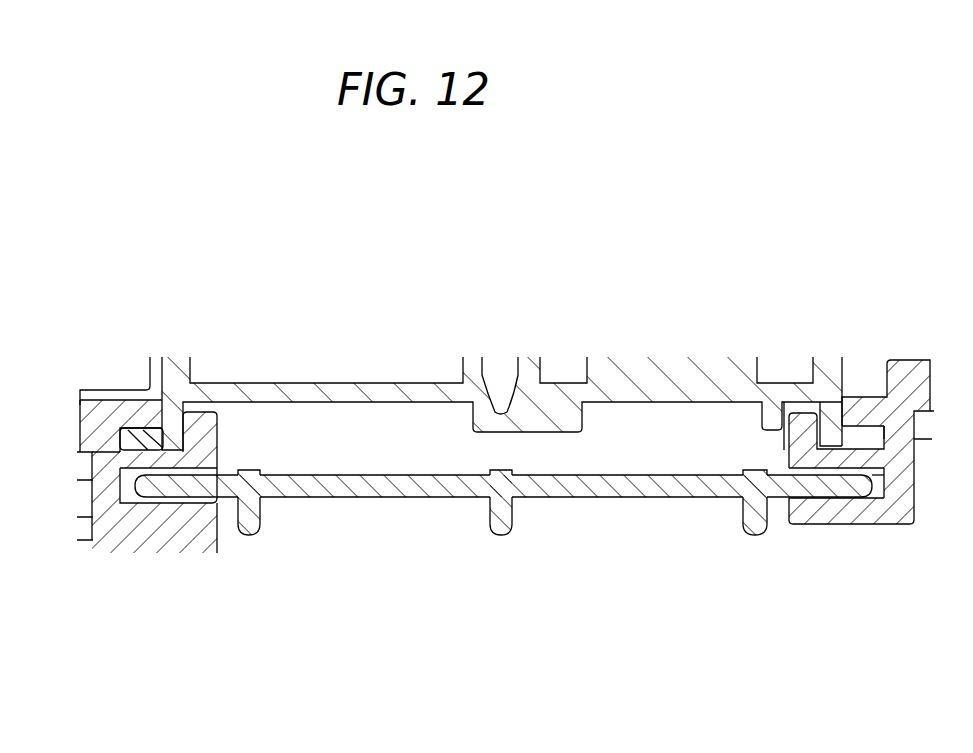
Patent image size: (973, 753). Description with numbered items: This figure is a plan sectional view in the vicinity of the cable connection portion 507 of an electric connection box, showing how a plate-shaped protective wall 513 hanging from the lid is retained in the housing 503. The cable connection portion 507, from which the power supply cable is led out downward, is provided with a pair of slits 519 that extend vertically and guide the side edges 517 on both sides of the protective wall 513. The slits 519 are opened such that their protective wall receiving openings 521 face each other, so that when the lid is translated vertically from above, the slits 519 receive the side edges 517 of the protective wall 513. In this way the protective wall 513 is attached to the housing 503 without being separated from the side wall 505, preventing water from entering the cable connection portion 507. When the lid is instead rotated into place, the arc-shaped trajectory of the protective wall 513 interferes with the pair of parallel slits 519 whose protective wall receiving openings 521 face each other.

The housing 503 is at (220, 557).
The side wall 505 is at (908, 348).
The cable connection portion 507 is at (647, 428).
The protective wall 513 is at (373, 500).
The side edges 517 is at (120, 490).
The slits 519 is at (190, 473).
The protective wall receiving openings 521 is at (222, 473).